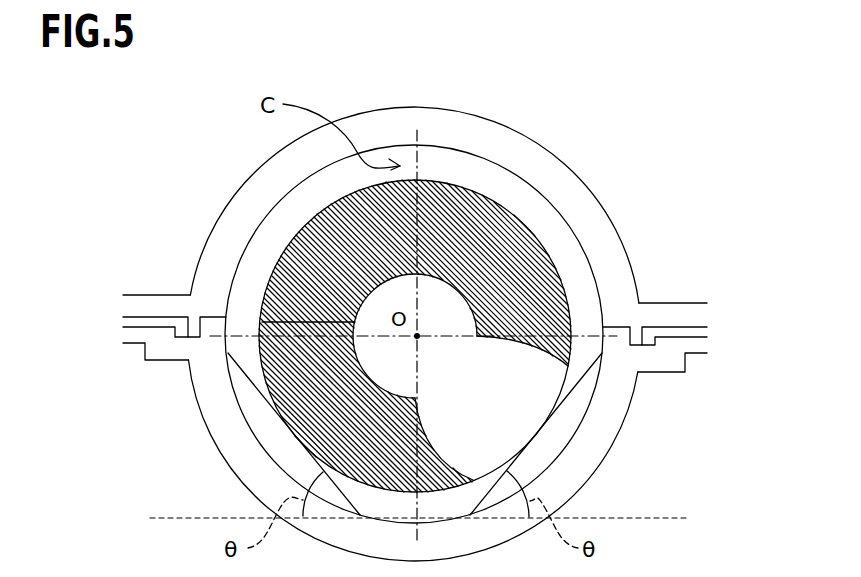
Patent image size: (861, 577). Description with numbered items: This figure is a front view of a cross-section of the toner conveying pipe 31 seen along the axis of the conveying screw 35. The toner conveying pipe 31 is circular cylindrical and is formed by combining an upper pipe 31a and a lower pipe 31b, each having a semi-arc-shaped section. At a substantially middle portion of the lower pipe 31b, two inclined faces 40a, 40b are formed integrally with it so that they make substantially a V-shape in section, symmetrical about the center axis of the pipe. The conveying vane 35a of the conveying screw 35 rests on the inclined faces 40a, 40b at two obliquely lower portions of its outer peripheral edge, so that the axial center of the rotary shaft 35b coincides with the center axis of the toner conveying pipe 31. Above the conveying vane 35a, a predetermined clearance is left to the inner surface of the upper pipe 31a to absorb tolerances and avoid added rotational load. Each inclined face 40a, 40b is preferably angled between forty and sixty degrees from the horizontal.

The toner conveying pipe 31 is at (218, 187).
The upper pipe 31a is at (622, 273).
The lower pipe 31b is at (622, 387).
The conveying screw 35 is at (432, 266).
The conveying vane 35a is at (543, 277).
The rotary shaft 35b is at (447, 307).
The inclined face 40a is at (260, 393).
The inclined face 40b is at (578, 418).